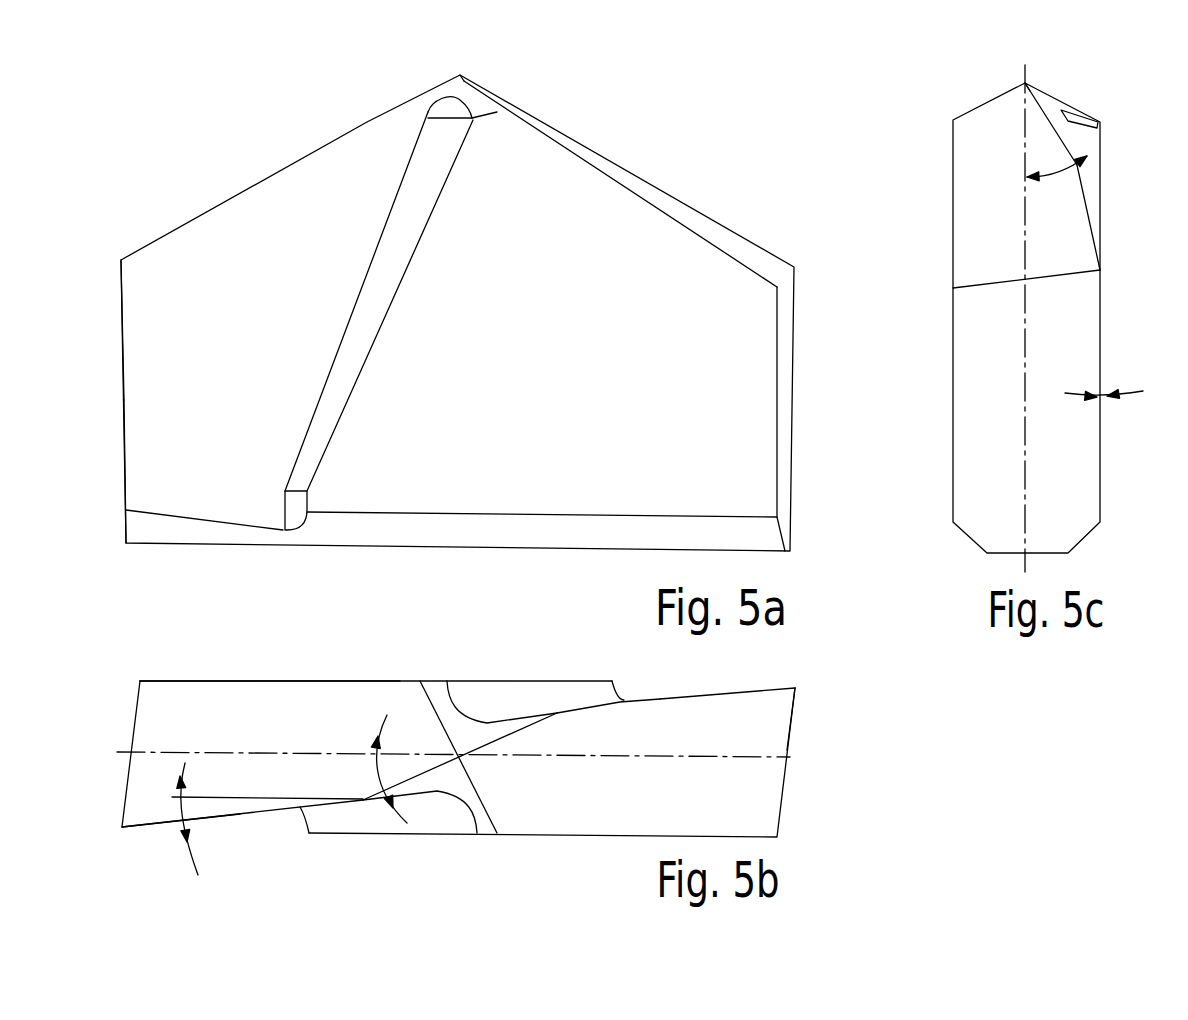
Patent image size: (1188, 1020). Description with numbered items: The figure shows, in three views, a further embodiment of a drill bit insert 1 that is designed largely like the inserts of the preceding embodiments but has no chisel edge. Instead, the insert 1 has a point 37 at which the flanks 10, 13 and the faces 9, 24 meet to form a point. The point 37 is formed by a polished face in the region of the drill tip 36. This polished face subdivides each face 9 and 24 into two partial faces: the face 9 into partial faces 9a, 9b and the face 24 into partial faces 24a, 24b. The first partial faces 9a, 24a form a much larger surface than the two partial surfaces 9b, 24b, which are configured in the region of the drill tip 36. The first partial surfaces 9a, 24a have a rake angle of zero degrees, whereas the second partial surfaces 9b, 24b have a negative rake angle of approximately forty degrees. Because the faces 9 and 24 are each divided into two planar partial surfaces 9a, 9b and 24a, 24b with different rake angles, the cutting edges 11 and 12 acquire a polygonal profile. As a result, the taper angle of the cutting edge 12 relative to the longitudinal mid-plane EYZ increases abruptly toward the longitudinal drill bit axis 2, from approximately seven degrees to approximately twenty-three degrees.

In FIG. 5A, the drill bit insert 1 is at (614, 143).
In FIG. 5C, the drill bit insert 1 is at (1108, 111).
In FIG. 5B, the drill bit insert 1 is at (517, 676).
In FIG. 5C, the longitudinal drill bit axis 2 is at (1025, 222).
In FIG. 5B, the longitudinal drill bit axis 2 is at (465, 757).
In FIG. 5A, the face 9 is at (140, 384).
In FIG. 5C, the face 9 is at (1088, 203).
In FIG. 5B, the face 9 is at (255, 812).
In FIG. 5A, the first partial face 9a is at (140, 323).
In FIG. 5C, the first partial face 9a is at (1090, 220).
In FIG. 5B, the first partial face 9a is at (233, 815).
In FIG. 5A, the second partial face 9b is at (447, 92).
In FIG. 5C, the second partial face 9b is at (1052, 103).
In FIG. 5B, the second partial face 9b is at (452, 782).
In FIG. 5B, the flank 10 is at (185, 697).
In FIG. 5B, the cutting edge 11 is at (277, 810).
In FIG. 5B, the cutting edge 12 is at (725, 695).
In FIG. 5B, the flank 13 is at (773, 712).
In FIG. 5B, the face 24 is at (662, 700).
In FIG. 5B, the first partial face 24a is at (648, 698).
In FIG. 5B, the second partial face 24b is at (470, 738).
In FIG. 5A, the drill tip 36 is at (522, 96).
In FIG. 5A, the point 37 is at (465, 72).
In FIG. 5C, the point 37 is at (1022, 82).
In FIG. 5B, the point 37 is at (466, 765).
In FIG. 5B, the longitudinal mid-plane EYZ is at (788, 763).